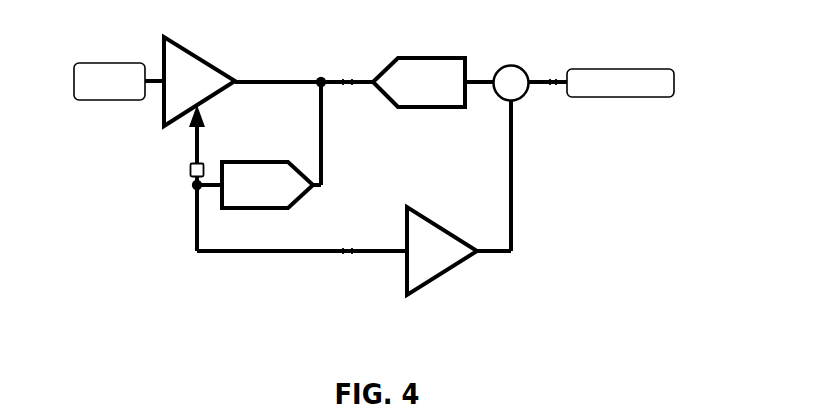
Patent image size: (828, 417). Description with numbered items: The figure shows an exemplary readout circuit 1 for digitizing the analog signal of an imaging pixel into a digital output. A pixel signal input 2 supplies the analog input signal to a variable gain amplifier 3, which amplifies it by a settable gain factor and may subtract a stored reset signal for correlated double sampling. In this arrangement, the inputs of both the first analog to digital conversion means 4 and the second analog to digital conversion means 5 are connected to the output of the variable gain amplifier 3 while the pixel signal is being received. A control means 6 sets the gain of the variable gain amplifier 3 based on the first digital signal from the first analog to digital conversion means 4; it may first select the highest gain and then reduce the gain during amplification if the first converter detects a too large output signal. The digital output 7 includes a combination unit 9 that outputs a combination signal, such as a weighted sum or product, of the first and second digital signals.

The readout circuit 1 is at (584, 253).
The pixel signal input 2 is at (107, 96).
The variable gain amplifier 3 is at (206, 58).
The first analog to digital conversion means 4 is at (220, 188).
The second analog to digital conversion means 5 is at (398, 105).
The control means 6 is at (188, 168).
The digital output 7 is at (607, 68).
The combination unit 9 is at (438, 222).